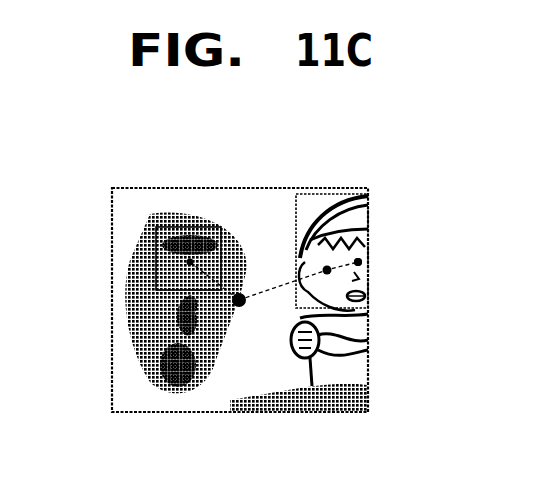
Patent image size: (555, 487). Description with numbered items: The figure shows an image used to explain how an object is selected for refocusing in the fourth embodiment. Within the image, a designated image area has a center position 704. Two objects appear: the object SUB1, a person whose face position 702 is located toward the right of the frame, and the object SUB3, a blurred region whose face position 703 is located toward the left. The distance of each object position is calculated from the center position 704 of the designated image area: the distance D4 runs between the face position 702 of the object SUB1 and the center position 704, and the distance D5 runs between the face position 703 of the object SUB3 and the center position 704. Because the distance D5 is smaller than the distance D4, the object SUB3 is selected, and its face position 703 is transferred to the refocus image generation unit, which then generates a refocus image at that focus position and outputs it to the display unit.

The object SUB1 is at (328, 205).
The object SUB3 is at (185, 227).
The face position of the object SUB1 702 is at (362, 263).
The face position of the object SUB3 703 is at (190, 262).
The center position of the designated image area 704 is at (239, 307).
The distance between the face position of the object SUB1 and the center position D4 is at (358, 266).
The distance between the face position of the object SUB3 and the center position D5 is at (239, 300).